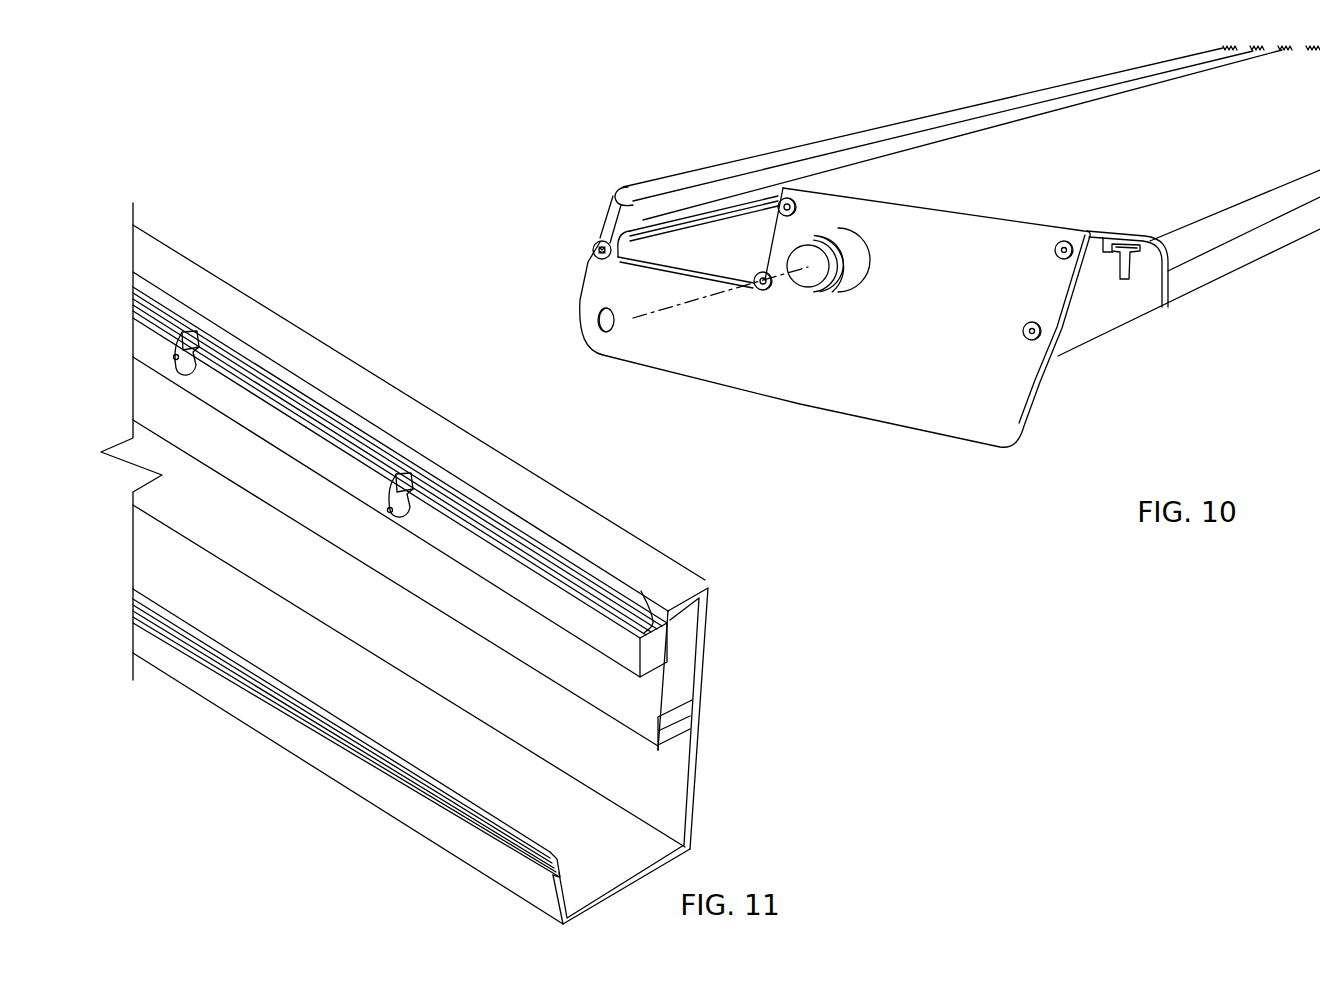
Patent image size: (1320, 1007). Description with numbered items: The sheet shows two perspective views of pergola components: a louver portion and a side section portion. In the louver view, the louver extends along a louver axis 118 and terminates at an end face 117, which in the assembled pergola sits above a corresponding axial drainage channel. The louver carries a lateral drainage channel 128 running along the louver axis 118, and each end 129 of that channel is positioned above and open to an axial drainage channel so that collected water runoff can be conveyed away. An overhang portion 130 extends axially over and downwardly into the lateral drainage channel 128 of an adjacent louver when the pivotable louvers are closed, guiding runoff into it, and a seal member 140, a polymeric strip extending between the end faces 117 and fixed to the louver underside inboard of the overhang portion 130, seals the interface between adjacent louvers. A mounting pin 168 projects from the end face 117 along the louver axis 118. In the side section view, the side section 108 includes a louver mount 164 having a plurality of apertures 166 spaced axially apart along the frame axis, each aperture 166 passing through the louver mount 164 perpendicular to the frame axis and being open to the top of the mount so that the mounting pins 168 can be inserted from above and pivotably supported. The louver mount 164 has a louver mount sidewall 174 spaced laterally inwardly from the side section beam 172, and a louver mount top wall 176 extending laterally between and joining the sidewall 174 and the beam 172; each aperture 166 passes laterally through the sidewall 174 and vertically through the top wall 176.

In FIG. 11, the side section 108 is at (760, 753).
In FIG. 10, the end face 117 is at (907, 378).
In FIG. 10, the louver axis 118 is at (665, 311).
In FIG. 10, the lateral drainage channel 128 is at (749, 186).
In FIG. 10, the end 129 is at (622, 221).
In FIG. 10, the overhang portion 130 is at (1197, 256).
In FIG. 10, the seal member 140 is at (1130, 276).
In FIG. 11, the louver mount 164 is at (521, 598).
In FIG. 11, the aperture 166 is at (174, 357).
In FIG. 10, the mounting pin 168 is at (808, 278).
In FIG. 11, the side section beam 172 is at (705, 643).
In FIG. 11, the louver mount sidewall 174 is at (632, 657).
In FIG. 11, the louver mount top wall 176 is at (647, 606).